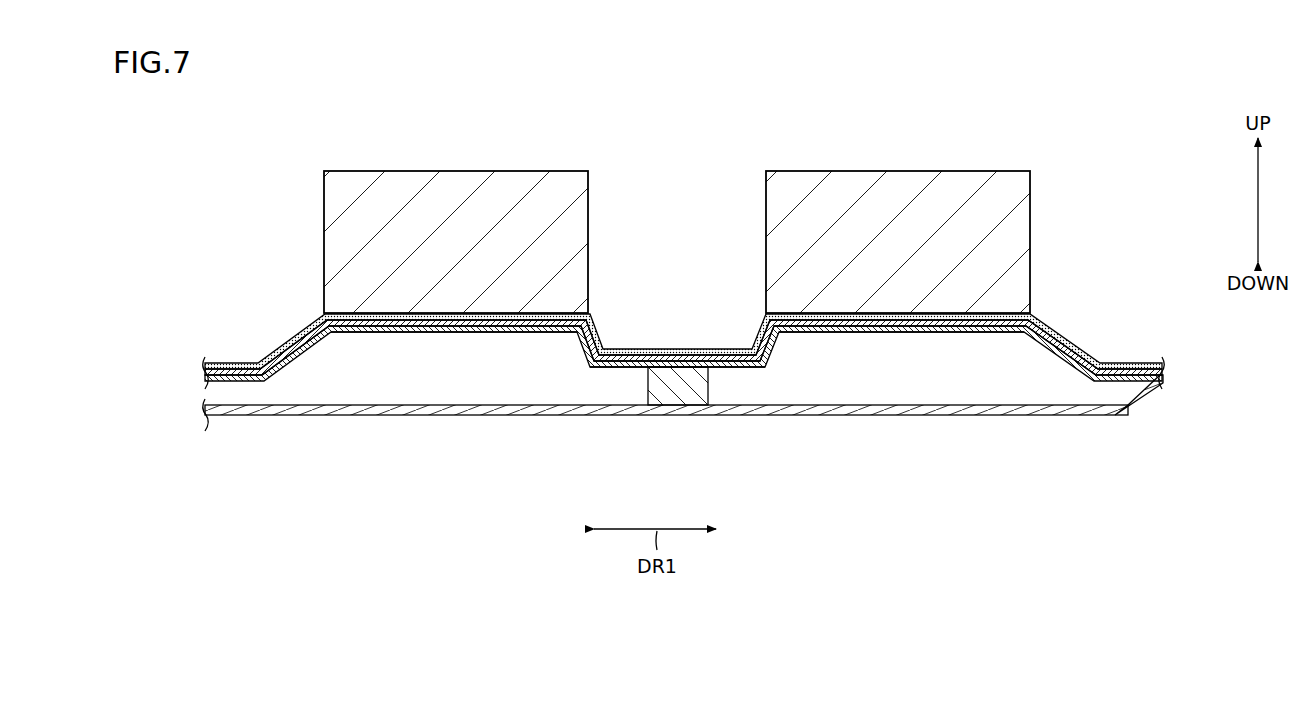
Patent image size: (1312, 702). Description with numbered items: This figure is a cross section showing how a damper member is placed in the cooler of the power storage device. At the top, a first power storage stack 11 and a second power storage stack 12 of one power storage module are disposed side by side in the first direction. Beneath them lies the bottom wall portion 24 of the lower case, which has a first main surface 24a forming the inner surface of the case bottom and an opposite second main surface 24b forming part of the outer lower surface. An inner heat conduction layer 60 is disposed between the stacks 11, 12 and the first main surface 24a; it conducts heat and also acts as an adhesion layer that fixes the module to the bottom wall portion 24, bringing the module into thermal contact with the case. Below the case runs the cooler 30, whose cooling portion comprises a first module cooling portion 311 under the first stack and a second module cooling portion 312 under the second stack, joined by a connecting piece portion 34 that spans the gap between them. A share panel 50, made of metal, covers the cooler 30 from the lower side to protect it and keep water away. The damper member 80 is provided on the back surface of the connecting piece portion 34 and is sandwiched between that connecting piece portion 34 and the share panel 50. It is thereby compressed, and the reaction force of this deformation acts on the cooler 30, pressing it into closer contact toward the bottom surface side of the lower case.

The first power storage stack 11 is at (466, 171).
The second power storage stack 12 is at (905, 171).
The inner heat conduction layer 60 is at (323, 318).
The bottom wall portion 24 is at (656, 345).
The first main surface 24a is at (208, 390).
The second main surface 24b is at (204, 388).
The first module cooling portion 311 is at (437, 334).
The second module cooling portion 312 is at (900, 334).
The connecting piece portion 34 is at (627, 368).
The damper member 80 is at (684, 388).
The share panel 50 is at (1012, 419).
The cooler 30 is at (1121, 388).